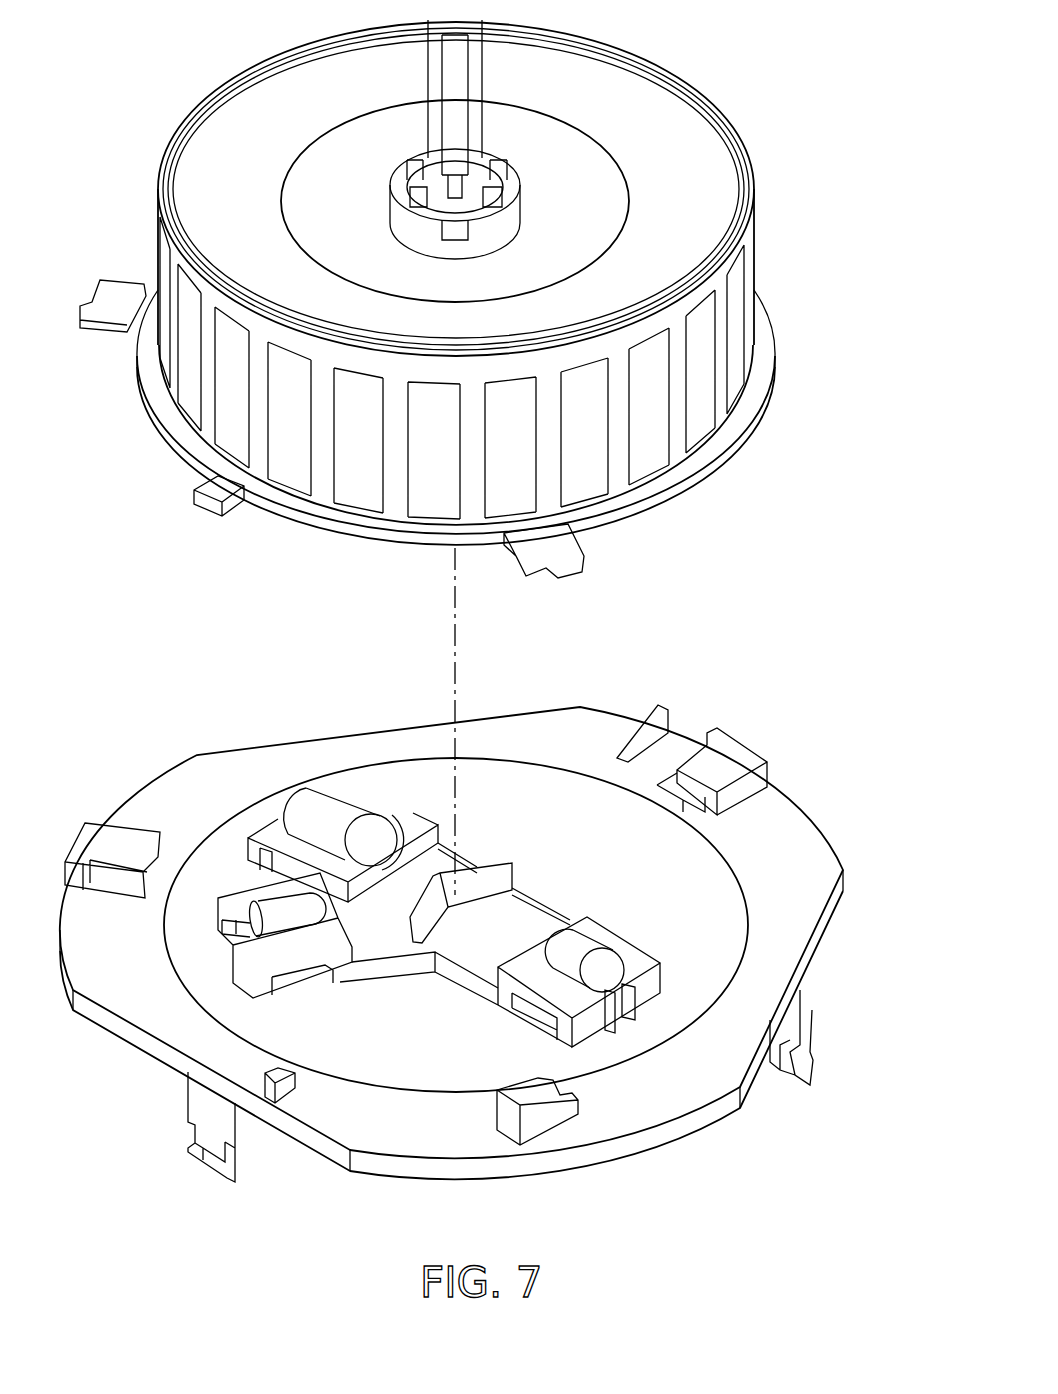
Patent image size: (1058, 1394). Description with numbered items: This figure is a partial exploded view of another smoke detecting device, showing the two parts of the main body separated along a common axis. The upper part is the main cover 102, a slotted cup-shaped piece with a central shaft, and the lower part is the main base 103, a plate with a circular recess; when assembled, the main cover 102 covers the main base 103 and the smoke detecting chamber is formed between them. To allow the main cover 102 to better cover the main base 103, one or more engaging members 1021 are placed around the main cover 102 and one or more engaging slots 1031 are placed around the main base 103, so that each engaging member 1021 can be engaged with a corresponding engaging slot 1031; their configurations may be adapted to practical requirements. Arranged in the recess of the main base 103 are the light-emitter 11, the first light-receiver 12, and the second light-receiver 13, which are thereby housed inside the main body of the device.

The main cover 102 is at (665, 147).
The engaging member 1021 is at (118, 296).
The main base 103 is at (696, 948).
The engaging slot 1031 is at (92, 843).
The light-emitter 11 is at (340, 815).
The first light-receiver 12 is at (577, 955).
The second light-receiver 13 is at (280, 912).